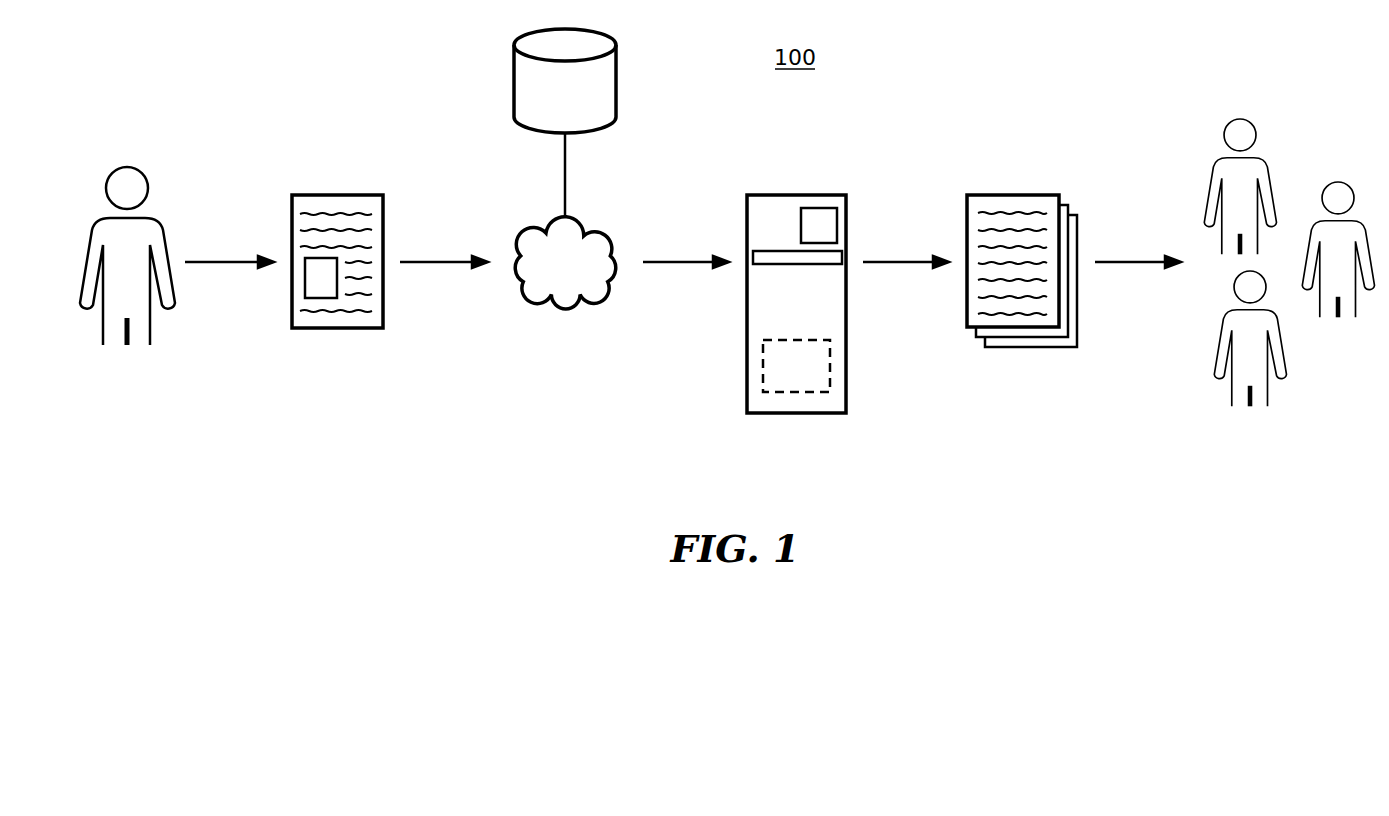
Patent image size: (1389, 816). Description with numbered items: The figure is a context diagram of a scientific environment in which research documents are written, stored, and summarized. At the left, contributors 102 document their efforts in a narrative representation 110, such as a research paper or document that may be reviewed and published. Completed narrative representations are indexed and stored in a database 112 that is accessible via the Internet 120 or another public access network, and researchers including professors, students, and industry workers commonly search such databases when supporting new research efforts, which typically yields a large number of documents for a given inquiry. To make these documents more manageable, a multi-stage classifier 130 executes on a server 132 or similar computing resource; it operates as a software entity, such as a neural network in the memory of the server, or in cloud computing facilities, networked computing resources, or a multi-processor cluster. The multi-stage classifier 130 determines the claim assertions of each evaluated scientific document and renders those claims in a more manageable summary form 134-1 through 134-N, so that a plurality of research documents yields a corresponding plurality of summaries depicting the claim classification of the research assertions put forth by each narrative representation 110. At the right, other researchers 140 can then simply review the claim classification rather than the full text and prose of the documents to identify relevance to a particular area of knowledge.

The contributors 102 is at (130, 167).
The narrative representation 110 is at (338, 195).
The database 112 is at (584, 109).
The Internet 120 is at (584, 273).
The multi-stage classifier 130 is at (817, 378).
The server 132 is at (753, 304).
The summary form 134-1 is at (967, 313).
The summary form 134-N is at (1032, 350).
The other researchers 140 is at (1193, 412).